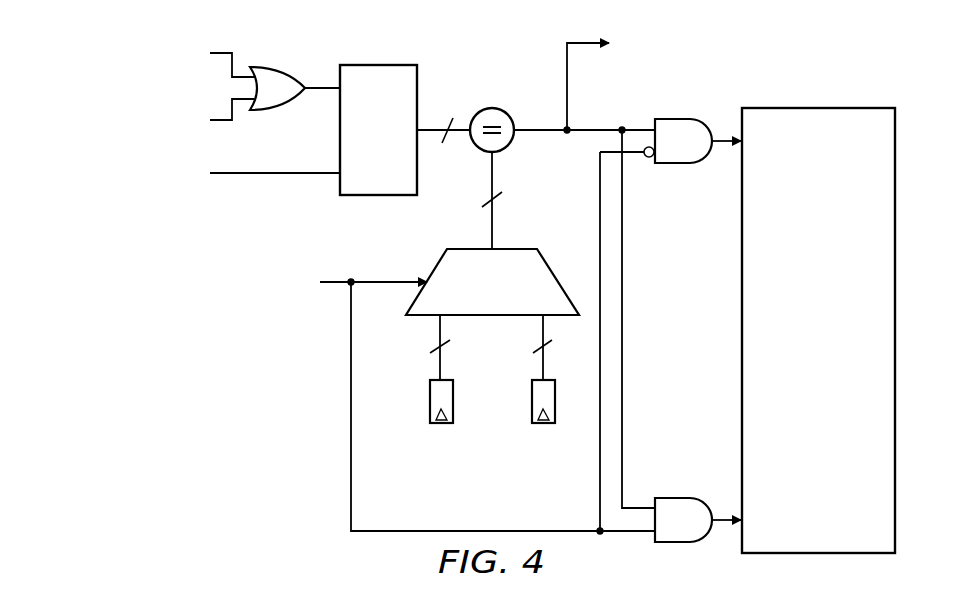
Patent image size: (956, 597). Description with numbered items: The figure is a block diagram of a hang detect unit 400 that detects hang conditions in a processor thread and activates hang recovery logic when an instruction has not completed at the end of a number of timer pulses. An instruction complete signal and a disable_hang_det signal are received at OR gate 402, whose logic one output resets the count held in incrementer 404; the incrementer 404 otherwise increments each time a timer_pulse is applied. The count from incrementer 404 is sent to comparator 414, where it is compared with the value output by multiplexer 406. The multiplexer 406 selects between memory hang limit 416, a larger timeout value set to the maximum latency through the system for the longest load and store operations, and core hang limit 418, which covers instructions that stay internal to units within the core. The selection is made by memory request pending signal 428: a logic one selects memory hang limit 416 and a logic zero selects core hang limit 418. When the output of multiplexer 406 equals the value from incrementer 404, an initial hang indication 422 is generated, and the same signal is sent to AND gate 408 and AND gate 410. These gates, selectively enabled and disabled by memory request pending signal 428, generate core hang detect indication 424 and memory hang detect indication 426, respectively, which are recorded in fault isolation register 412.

The hang detect unit 400 is at (136, 452).
The OR gate 402 is at (275, 66).
The incrementer 404 is at (372, 64).
The multiplexer 406 is at (525, 248).
The AND gate 408 is at (677, 164).
The AND gate 410 is at (677, 497).
The fault isolation register 412 is at (820, 107).
The comparator 414 is at (490, 107).
The memory hang limit 416 is at (429, 388).
The core hang limit 418 is at (531, 388).
The initial hang indication 422 is at (567, 87).
The core hang detect indication 424 is at (808, 172).
The memory hang detect indication 426 is at (808, 488).
The memory request pending signal 428 is at (383, 279).